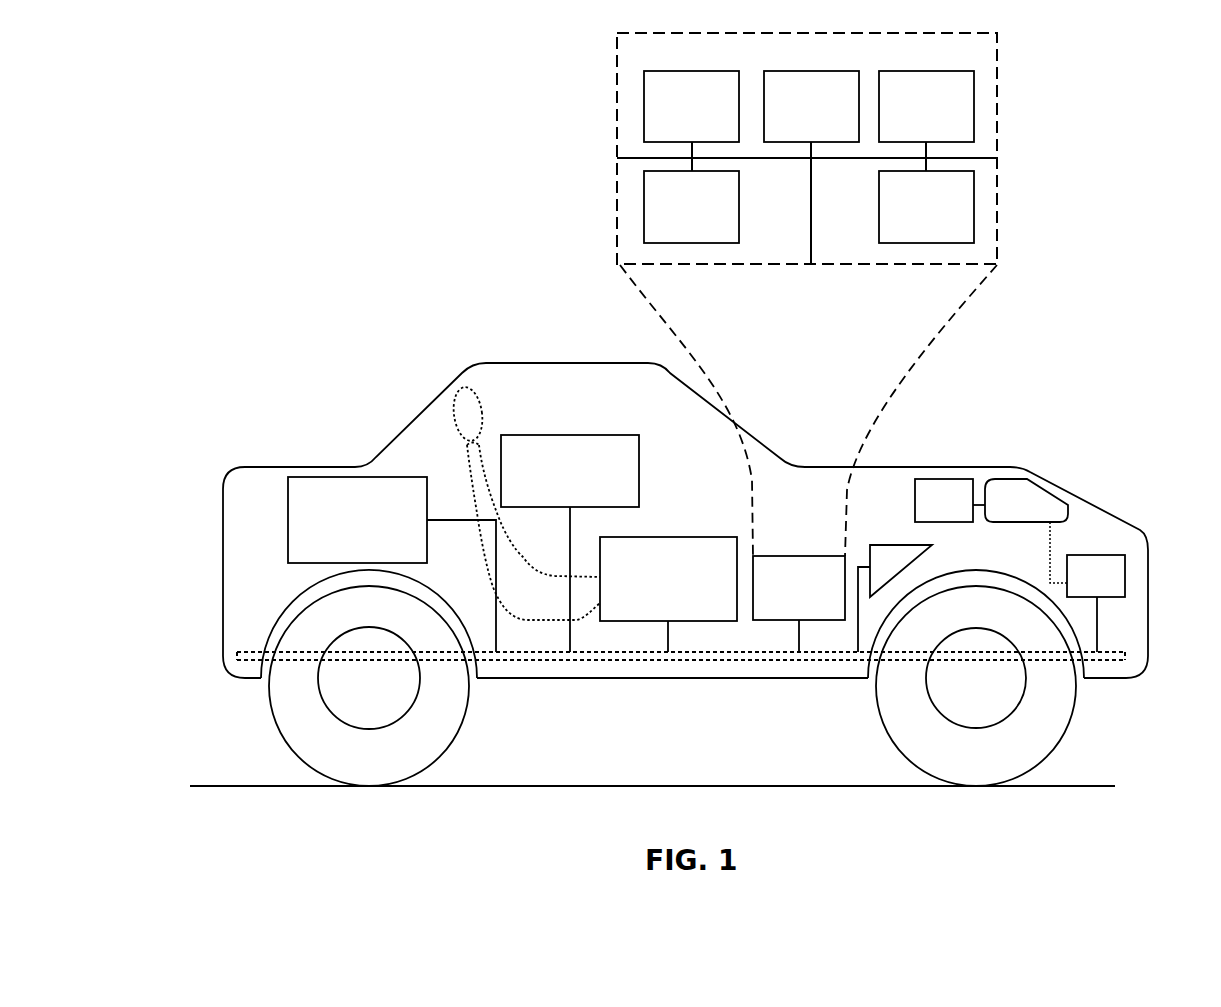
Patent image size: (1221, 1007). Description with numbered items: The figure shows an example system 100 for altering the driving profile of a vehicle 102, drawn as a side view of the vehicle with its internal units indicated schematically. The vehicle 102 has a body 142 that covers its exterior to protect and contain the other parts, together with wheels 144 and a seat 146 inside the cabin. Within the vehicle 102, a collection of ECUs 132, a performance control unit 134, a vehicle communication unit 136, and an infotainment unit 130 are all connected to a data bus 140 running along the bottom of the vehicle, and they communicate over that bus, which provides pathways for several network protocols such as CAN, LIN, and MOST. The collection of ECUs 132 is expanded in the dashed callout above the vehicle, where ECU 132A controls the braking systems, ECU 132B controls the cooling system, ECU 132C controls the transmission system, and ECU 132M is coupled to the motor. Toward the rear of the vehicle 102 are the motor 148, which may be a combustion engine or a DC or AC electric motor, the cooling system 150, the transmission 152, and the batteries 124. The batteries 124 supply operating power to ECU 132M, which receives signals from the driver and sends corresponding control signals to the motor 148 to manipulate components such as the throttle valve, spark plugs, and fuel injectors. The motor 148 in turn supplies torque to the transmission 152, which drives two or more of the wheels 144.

The system 100 is at (242, 179).
The vehicle 102 is at (357, 401).
The batteries 124 is at (1093, 555).
The infotainment unit 130 is at (570, 543).
The ECUs 132 is at (807, 342).
The ECU 132A is at (691, 106).
The ECU 132B is at (811, 106).
The ECU 132C is at (926, 106).
The ECU 132M is at (691, 207).
The performance control unit 134 is at (668, 594).
The vehicle communication unit 136 is at (392, 564).
The data bus 140 is at (617, 660).
The body 142 is at (290, 467).
The wheels 144 is at (278, 715).
The seat 146 is at (458, 386).
The motor 148 is at (1050, 492).
The cooling system 150 is at (923, 479).
The transmission 152 is at (917, 555).